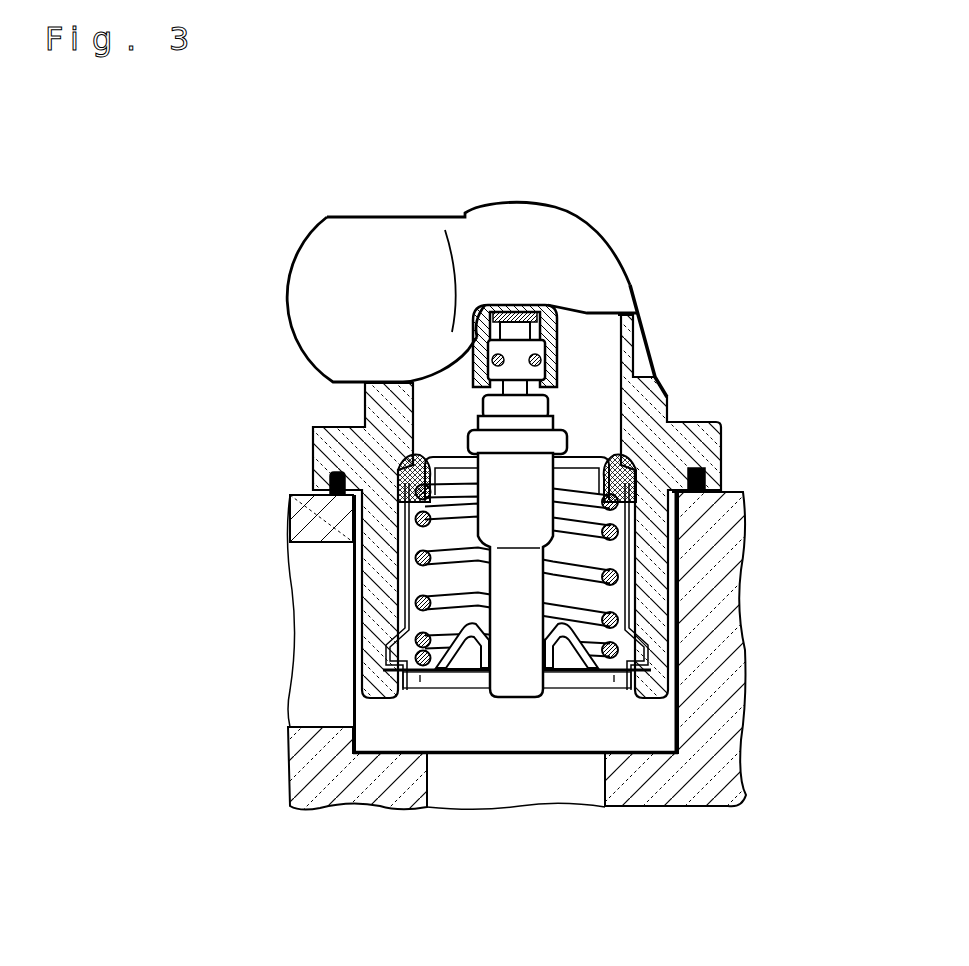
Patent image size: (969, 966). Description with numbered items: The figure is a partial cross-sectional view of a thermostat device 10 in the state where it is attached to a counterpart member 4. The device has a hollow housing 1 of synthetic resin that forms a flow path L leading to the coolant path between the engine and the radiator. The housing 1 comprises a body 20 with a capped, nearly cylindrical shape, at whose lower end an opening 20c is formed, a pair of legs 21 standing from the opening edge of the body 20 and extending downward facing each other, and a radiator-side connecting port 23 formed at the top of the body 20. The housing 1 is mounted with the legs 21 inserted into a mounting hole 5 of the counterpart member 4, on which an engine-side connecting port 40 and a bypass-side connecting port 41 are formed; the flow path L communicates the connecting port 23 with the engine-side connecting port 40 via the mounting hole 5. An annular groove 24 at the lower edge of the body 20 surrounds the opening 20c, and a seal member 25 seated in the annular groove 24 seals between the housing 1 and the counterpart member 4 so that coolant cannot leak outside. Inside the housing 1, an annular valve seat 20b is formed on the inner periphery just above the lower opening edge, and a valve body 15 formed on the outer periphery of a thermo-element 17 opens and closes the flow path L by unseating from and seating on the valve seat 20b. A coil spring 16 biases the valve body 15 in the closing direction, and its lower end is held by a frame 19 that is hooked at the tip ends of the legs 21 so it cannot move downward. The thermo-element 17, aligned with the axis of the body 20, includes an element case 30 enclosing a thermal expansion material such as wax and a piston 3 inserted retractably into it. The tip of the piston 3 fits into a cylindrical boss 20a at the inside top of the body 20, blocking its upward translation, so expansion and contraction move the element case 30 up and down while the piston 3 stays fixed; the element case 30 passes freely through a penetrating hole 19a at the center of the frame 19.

The thermostat device 10 is at (194, 214).
The housing 1 is at (711, 422).
The piston 3 is at (556, 352).
The counterpart member 4 is at (755, 680).
The mounting hole 5 is at (380, 735).
The valve body 15 is at (427, 455).
The coil spring 16 is at (357, 613).
The thermo-element 17 is at (518, 682).
The frame 19 is at (587, 690).
The penetrating hole 19a is at (478, 692).
The body 20 is at (607, 252).
The boss 20a is at (548, 330).
The valve seat 20b is at (328, 473).
The opening 20c is at (620, 418).
The leg 21 is at (353, 562).
The connecting port 23 is at (407, 268).
The annular groove 24 is at (696, 493).
The seal member 25 is at (697, 492).
The element case 30 is at (528, 594).
The engine-side connecting port 40 is at (322, 727).
The bypass-side connecting port 41 is at (436, 793).
The flow path L is at (455, 373).